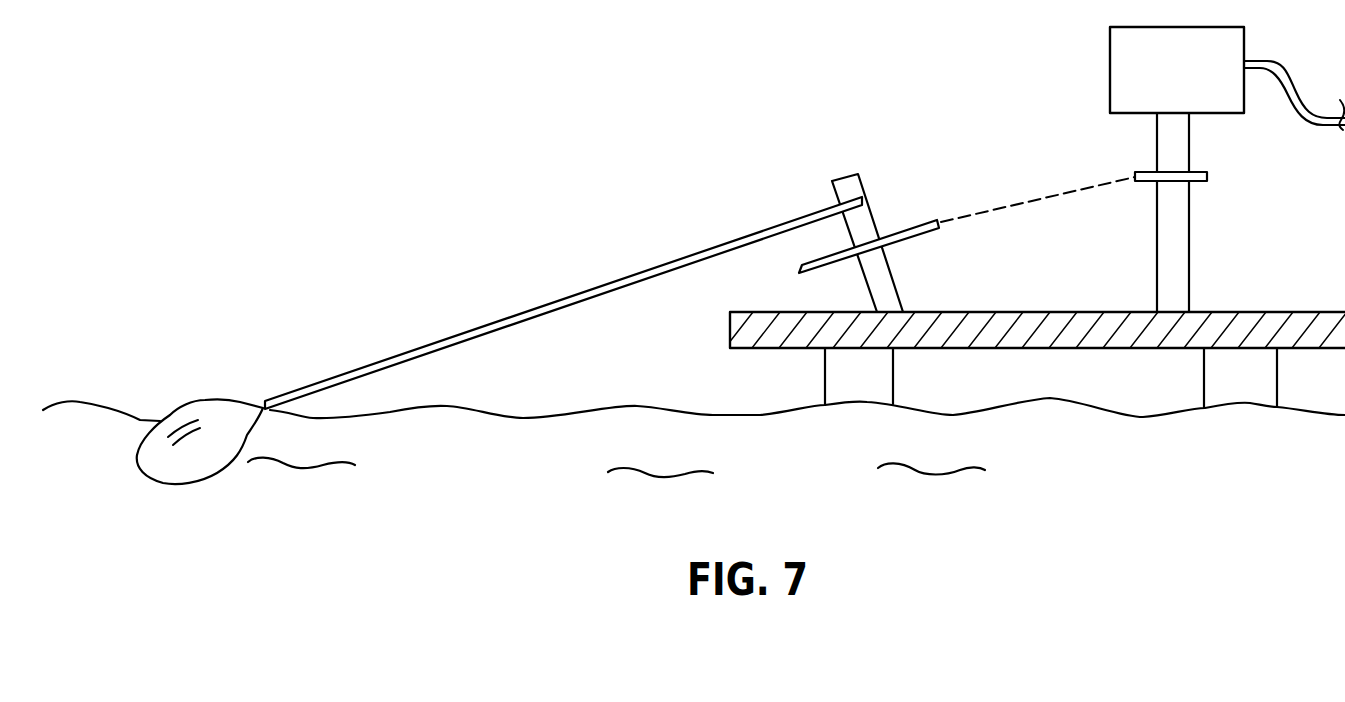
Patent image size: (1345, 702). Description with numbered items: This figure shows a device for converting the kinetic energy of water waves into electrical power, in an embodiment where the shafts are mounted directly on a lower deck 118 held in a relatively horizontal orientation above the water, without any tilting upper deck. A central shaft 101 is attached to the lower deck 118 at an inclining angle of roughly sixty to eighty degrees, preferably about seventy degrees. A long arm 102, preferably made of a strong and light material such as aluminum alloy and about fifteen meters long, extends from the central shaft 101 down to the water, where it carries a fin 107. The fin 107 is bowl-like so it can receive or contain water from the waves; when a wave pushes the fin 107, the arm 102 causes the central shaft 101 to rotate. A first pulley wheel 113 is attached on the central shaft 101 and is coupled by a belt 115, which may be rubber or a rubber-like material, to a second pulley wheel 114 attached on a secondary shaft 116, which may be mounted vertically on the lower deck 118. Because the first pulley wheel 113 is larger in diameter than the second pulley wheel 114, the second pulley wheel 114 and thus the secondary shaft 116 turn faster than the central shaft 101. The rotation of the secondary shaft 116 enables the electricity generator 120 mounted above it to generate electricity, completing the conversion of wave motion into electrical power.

The central shaft 101 is at (865, 180).
The arm 102 is at (572, 298).
The fin 107 is at (212, 400).
The first pulley wheel 113 is at (912, 243).
The second pulley wheel 114 is at (1208, 176).
The belt 115 is at (1030, 202).
The secondary shaft 116 is at (1190, 242).
The lower deck 118 is at (1008, 311).
The electricity generator 120 is at (1192, 77).